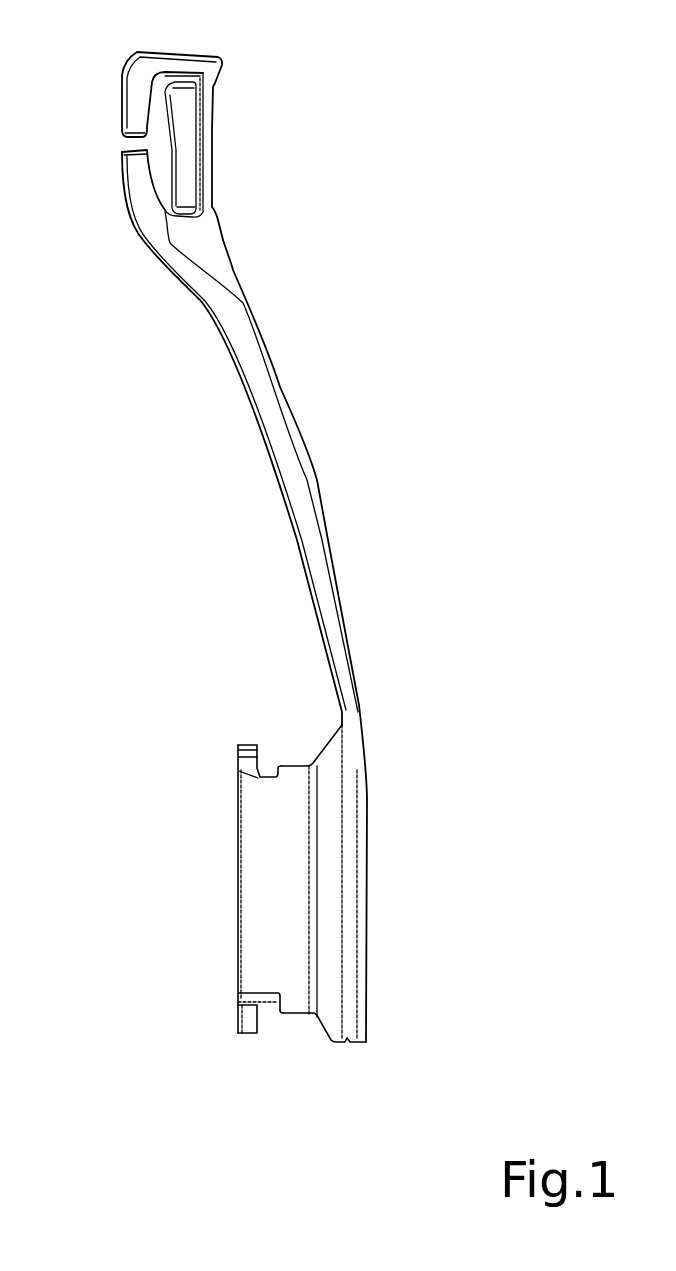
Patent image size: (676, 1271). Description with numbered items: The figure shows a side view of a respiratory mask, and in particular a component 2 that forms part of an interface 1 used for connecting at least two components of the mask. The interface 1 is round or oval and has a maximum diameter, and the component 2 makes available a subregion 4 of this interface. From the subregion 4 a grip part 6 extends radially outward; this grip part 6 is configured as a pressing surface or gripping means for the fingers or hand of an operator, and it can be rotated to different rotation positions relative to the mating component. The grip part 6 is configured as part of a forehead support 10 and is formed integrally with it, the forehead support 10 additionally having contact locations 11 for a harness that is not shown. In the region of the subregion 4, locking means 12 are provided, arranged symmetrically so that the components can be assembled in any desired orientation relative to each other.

The forehead support 10 is at (212, 70).
The contact locations 11 is at (155, 123).
The grip part 6 is at (300, 497).
The component 2 is at (353, 728).
The interface 1 is at (278, 840).
The subregion 4 is at (278, 960).
The locking means 12 is at (241, 1025).